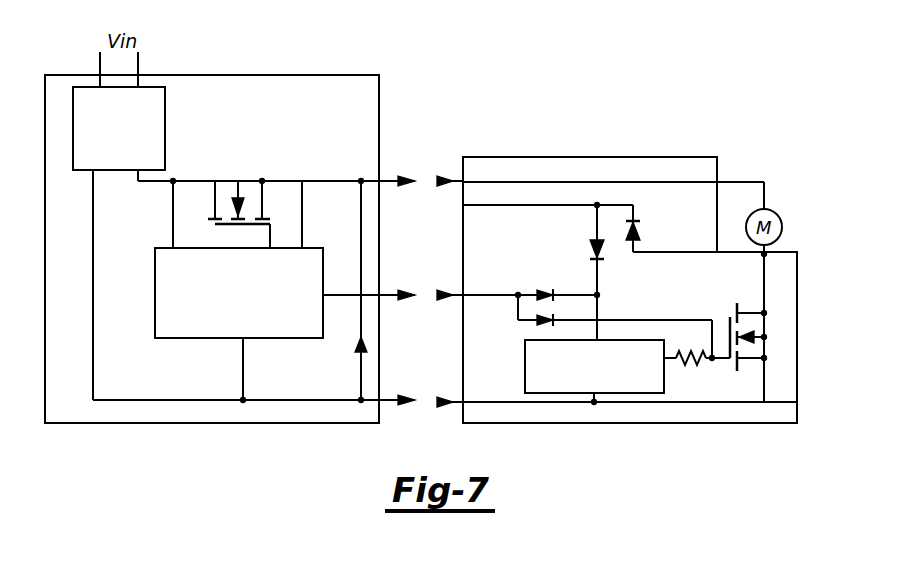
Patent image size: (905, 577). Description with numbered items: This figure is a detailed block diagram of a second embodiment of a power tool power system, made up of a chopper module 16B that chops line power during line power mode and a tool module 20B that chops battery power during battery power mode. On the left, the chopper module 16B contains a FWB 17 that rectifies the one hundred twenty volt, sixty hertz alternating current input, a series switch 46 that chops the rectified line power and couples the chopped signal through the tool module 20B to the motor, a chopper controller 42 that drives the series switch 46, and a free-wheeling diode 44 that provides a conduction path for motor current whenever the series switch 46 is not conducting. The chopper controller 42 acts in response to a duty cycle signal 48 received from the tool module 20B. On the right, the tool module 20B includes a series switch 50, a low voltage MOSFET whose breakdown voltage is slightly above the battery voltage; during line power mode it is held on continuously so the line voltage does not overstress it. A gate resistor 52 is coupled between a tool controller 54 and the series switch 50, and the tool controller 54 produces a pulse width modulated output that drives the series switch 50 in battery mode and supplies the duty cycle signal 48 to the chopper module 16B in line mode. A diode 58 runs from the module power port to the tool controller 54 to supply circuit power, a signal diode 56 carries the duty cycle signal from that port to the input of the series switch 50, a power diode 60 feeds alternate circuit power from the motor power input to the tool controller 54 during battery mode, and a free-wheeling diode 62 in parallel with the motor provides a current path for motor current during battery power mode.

The chopper module 16B is at (198, 75).
The FWB 17 is at (165, 158).
The series switch 46 is at (215, 181).
The chopper controller 42 is at (215, 340).
The free-wheeling diode 44 is at (357, 338).
The duty cycle signal 48 is at (390, 293).
The tool module 20B is at (656, 146).
The free-wheeling diode 62 is at (637, 228).
The power diode 60 is at (603, 262).
The diode 58 is at (552, 297).
The signal diode 56 is at (538, 323).
The tool controller 54 is at (525, 375).
The gate resistor 52 is at (690, 364).
The series switch 50 is at (762, 310).